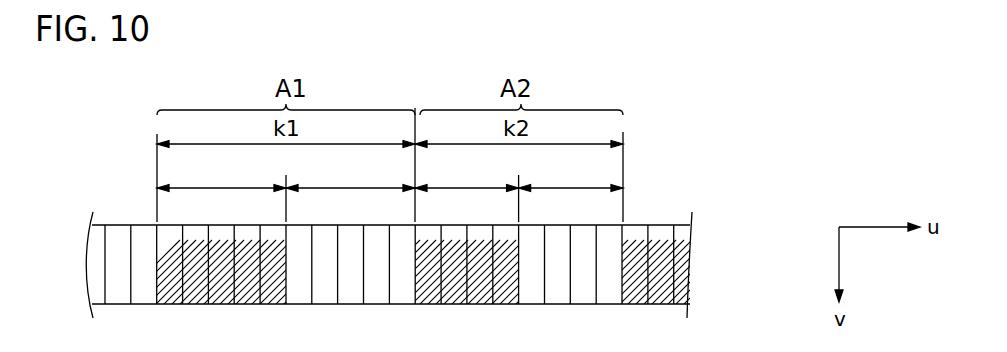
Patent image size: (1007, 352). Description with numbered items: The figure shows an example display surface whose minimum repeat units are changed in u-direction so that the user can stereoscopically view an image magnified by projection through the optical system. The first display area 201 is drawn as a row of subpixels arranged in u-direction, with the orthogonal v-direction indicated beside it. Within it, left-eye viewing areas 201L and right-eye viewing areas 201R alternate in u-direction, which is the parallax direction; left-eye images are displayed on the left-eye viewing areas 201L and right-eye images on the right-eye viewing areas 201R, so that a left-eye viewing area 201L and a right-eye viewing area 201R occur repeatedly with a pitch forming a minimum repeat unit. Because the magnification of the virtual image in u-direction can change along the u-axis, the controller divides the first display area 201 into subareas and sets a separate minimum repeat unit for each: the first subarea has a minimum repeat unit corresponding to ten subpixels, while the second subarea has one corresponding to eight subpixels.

The first display area 201 is at (657, 204).
The left-eye viewing areas 201L is at (338, 190).
The right-eye viewing areas 201R is at (454, 175).